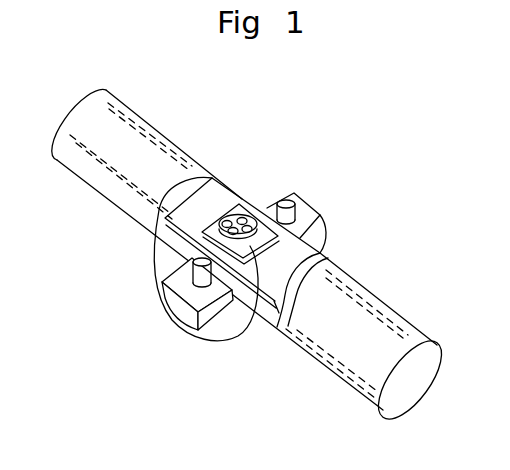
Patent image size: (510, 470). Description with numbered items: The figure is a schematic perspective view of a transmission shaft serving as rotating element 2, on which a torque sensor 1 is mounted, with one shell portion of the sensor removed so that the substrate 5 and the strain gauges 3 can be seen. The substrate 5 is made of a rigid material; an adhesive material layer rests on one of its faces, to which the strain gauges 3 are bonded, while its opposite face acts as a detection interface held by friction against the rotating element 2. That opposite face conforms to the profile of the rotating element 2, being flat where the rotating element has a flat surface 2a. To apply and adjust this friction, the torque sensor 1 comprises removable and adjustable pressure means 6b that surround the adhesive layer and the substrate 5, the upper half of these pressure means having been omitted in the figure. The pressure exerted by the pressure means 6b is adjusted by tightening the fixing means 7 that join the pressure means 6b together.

The torque sensor 1 is at (318, 198).
The rotating element 2 is at (341, 296).
The flat surface 2a is at (283, 247).
The strain gauges 3 is at (238, 341).
The substrate 5 is at (239, 204).
The pressure means 6b is at (189, 317).
The fixing means 7 is at (286, 199).